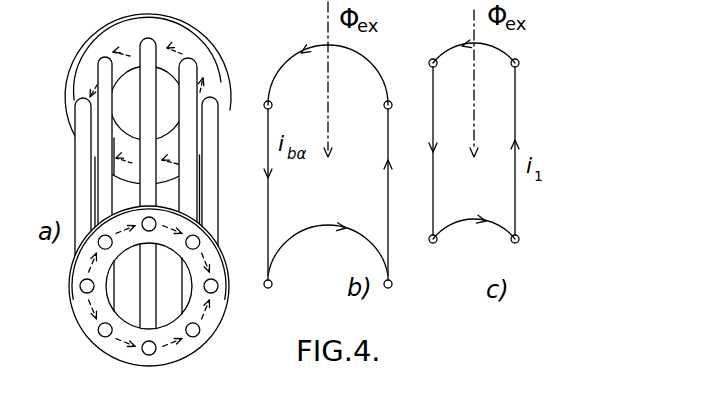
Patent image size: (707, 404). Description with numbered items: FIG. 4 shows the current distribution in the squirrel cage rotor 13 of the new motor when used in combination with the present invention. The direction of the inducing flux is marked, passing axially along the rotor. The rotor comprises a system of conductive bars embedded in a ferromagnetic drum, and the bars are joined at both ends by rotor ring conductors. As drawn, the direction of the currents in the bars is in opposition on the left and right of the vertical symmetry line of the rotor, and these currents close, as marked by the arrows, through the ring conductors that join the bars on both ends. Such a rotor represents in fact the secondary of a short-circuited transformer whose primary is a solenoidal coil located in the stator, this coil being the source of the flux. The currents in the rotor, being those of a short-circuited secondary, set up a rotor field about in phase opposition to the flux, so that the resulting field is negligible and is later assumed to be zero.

The squirrel cage rotor 13 is at (162, 76).